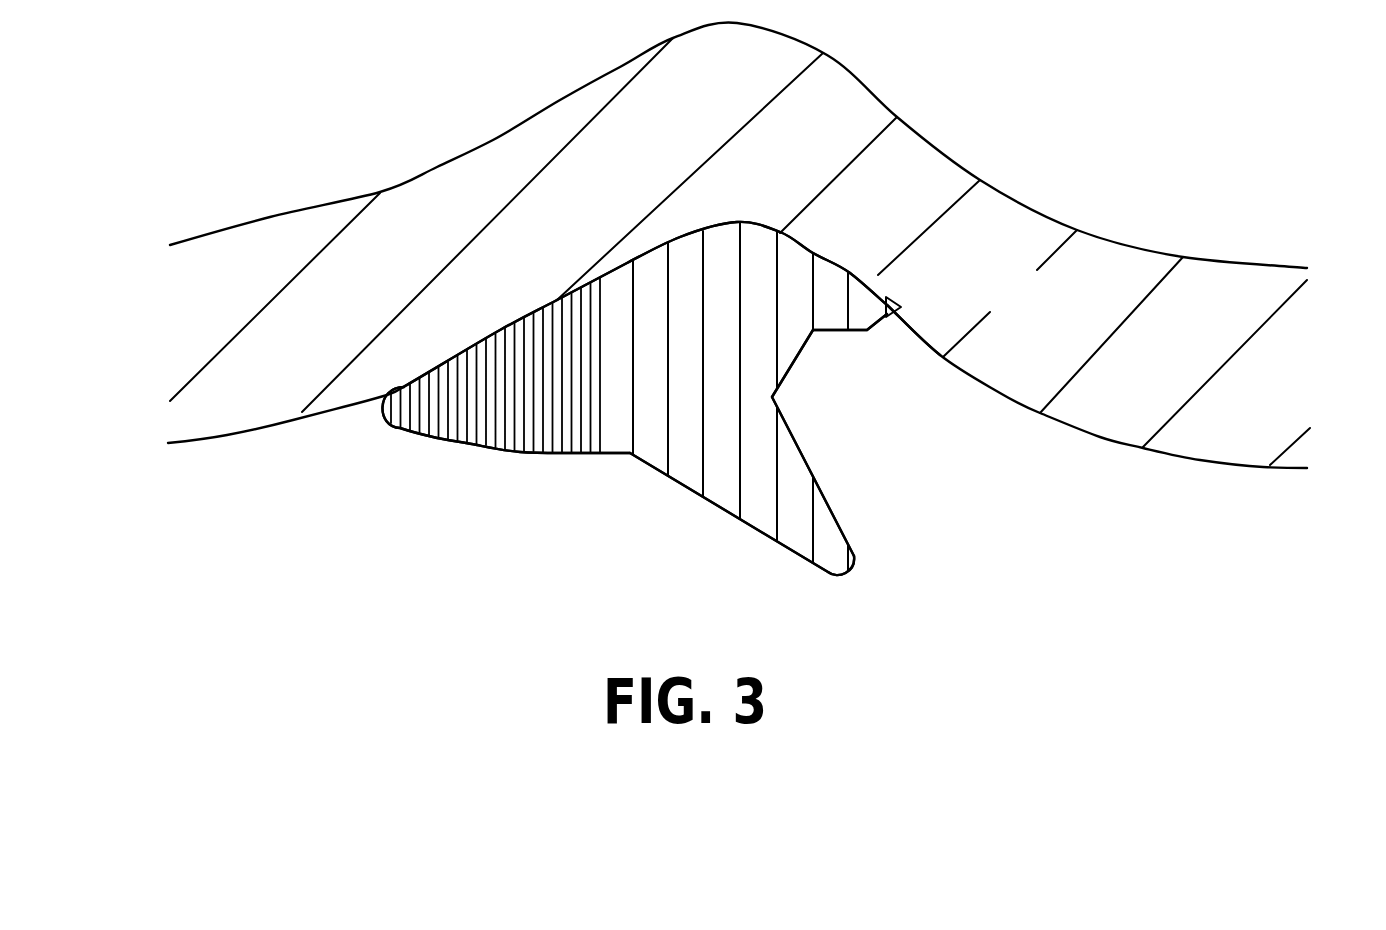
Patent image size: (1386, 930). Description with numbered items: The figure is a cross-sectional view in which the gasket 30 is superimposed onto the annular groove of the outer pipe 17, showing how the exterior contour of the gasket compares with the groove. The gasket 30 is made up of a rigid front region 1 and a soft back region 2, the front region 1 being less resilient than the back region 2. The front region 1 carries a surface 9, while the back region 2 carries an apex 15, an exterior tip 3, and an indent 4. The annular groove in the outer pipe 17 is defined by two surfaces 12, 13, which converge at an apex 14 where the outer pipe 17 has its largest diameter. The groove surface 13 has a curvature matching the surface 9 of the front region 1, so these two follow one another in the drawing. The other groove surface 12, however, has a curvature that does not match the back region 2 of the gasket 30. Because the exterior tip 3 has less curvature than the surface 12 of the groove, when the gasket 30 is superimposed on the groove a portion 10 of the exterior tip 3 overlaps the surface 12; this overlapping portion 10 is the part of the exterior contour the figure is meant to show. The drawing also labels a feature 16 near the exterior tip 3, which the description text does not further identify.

The rigid front region 1 is at (493, 417).
The soft back region 2 is at (723, 433).
The exterior tip 3 is at (858, 308).
The indent 4 is at (818, 340).
The surface 9 is at (627, 263).
The portion 10 is at (906, 307).
The surface 12 is at (973, 383).
The surface 13 is at (555, 300).
The apex 14 is at (727, 223).
The apex 15 is at (748, 227).
The tip 16 is at (878, 292).
The outer pipe 17 is at (1217, 290).
The gasket 30 is at (855, 595).